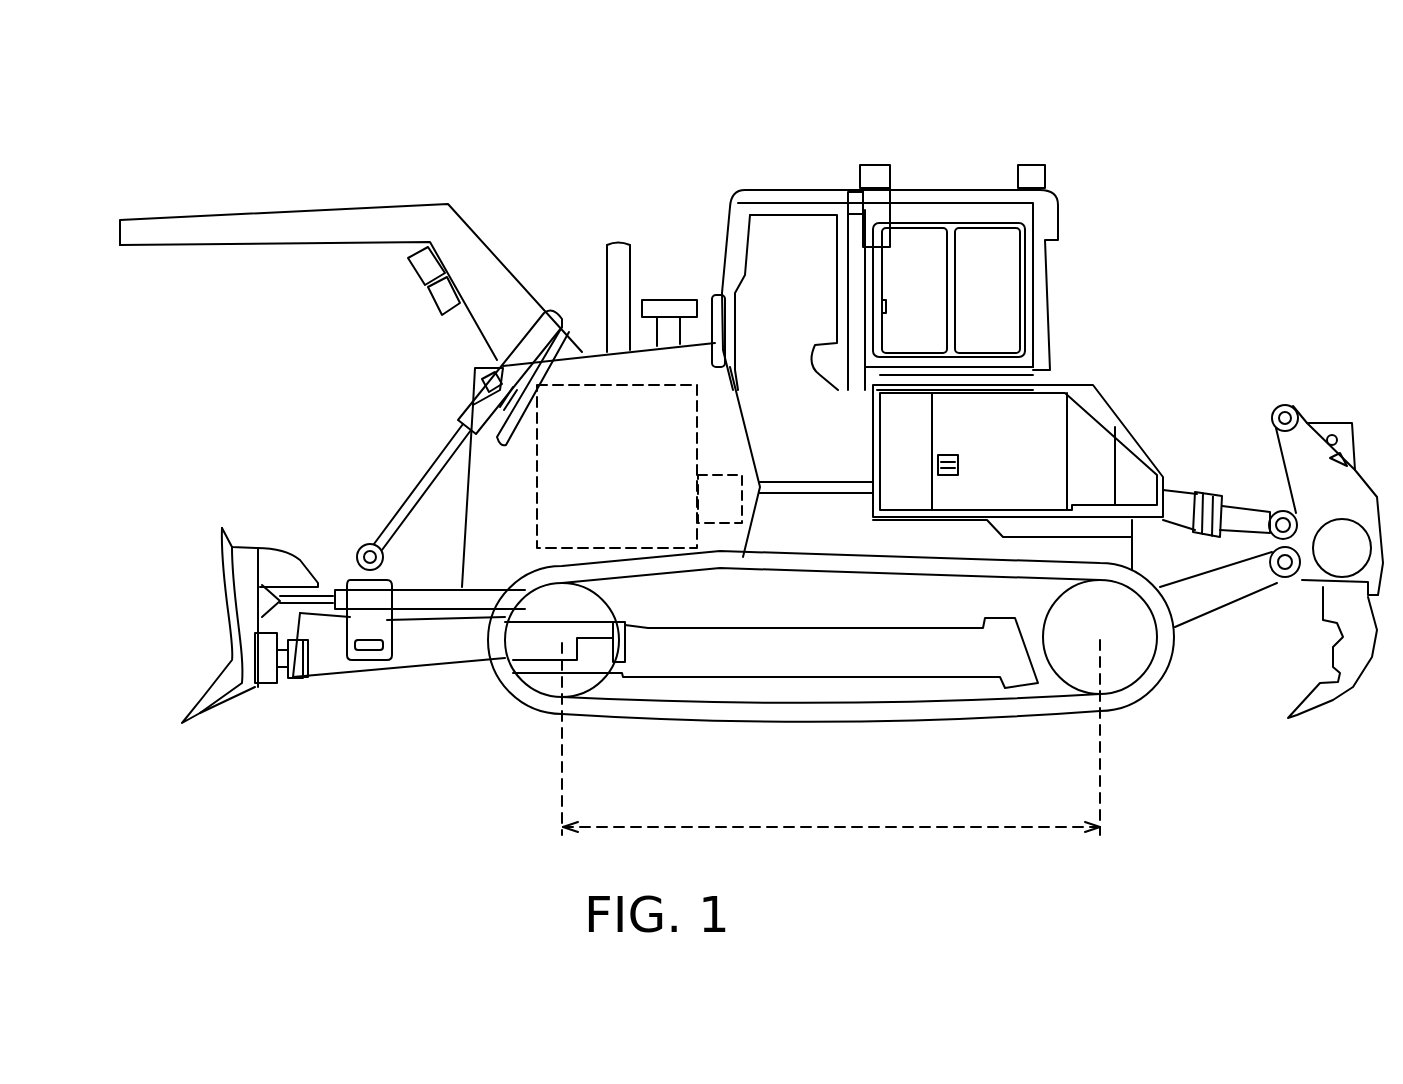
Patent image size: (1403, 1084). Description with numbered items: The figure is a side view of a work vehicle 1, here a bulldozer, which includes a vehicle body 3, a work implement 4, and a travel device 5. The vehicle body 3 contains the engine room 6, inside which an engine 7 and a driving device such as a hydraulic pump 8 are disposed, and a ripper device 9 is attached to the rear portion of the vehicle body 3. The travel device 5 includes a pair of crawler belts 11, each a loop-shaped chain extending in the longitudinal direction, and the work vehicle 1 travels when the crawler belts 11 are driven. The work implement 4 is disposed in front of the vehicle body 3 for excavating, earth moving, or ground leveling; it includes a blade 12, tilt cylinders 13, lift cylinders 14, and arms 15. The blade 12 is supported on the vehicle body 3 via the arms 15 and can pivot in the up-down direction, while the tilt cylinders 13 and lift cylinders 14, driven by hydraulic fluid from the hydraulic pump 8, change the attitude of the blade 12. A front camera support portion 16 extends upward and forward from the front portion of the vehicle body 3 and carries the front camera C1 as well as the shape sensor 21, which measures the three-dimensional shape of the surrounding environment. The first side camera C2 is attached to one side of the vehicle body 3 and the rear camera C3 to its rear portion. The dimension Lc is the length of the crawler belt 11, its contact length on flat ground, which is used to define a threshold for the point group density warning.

The work vehicle 1 is at (1222, 148).
The vehicle body 3 is at (933, 170).
The work implement 4 is at (243, 505).
The travel device 5 is at (838, 738).
The engine room 6 is at (670, 357).
The engine 7 is at (588, 383).
The hydraulic pump 8 is at (722, 524).
The ripper device 9 is at (1315, 400).
The crawler belt 11 is at (938, 720).
The blade 12 is at (233, 620).
The tilt cylinder 13 is at (440, 600).
The lift cylinder 14 is at (425, 468).
The arm 15 is at (412, 657).
The front camera support portion 16 is at (262, 222).
The shape sensor 21 is at (408, 262).
The front camera C1 is at (430, 303).
The first side camera C2 is at (873, 163).
The rear camera C3 is at (1046, 173).
The length of the crawler belt Lc is at (831, 755).